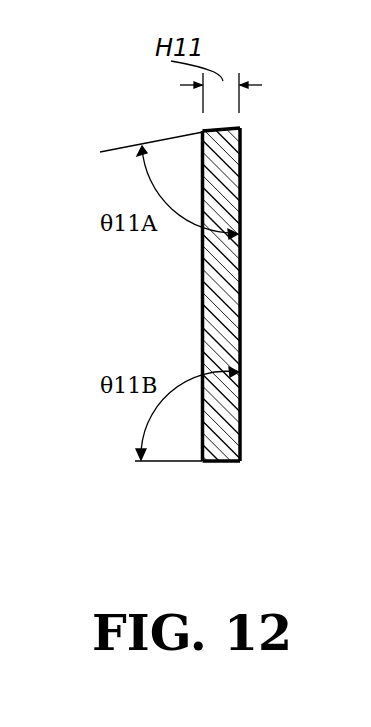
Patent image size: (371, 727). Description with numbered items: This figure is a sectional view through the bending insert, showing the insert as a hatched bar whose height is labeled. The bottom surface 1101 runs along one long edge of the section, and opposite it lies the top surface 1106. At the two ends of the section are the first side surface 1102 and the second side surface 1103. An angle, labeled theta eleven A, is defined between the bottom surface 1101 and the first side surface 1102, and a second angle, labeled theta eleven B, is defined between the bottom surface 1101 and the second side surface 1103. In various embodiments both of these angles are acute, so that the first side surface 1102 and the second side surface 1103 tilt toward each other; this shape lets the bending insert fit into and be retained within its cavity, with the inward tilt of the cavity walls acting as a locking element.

The bottom surface 1101 is at (334, 198).
The first side surface 1102 is at (334, 122).
The second side surface 1103 is at (219, 462).
The top surface 1106 is at (200, 283).